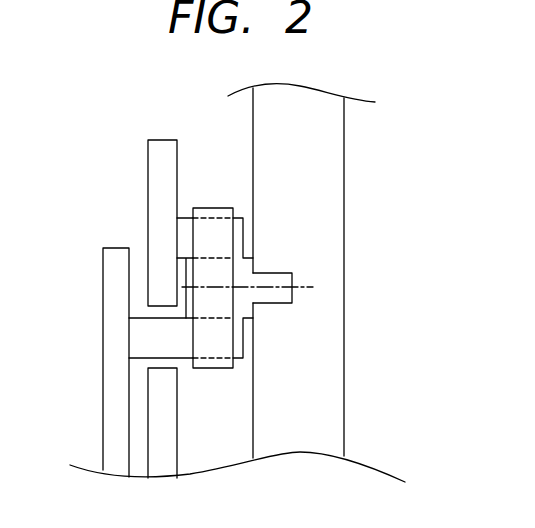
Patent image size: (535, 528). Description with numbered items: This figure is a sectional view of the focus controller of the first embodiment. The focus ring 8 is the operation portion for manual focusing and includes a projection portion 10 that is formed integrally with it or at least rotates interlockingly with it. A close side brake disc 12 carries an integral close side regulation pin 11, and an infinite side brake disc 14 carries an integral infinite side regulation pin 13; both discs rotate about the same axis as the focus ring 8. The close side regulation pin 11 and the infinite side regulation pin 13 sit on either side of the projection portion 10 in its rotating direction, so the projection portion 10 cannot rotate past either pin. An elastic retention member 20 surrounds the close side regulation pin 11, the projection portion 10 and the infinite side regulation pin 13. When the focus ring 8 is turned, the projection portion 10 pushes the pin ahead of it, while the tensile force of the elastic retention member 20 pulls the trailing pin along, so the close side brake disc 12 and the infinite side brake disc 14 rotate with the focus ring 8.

The focus ring 8 is at (335, 155).
The projection portion 10 is at (277, 278).
The close side regulation pin 11 is at (138, 337).
The close side brake disc 12 is at (110, 430).
The infinite side regulation pin 13 is at (183, 220).
The infinite side brake disc 14 is at (162, 140).
The elastic retention member 20 is at (218, 337).